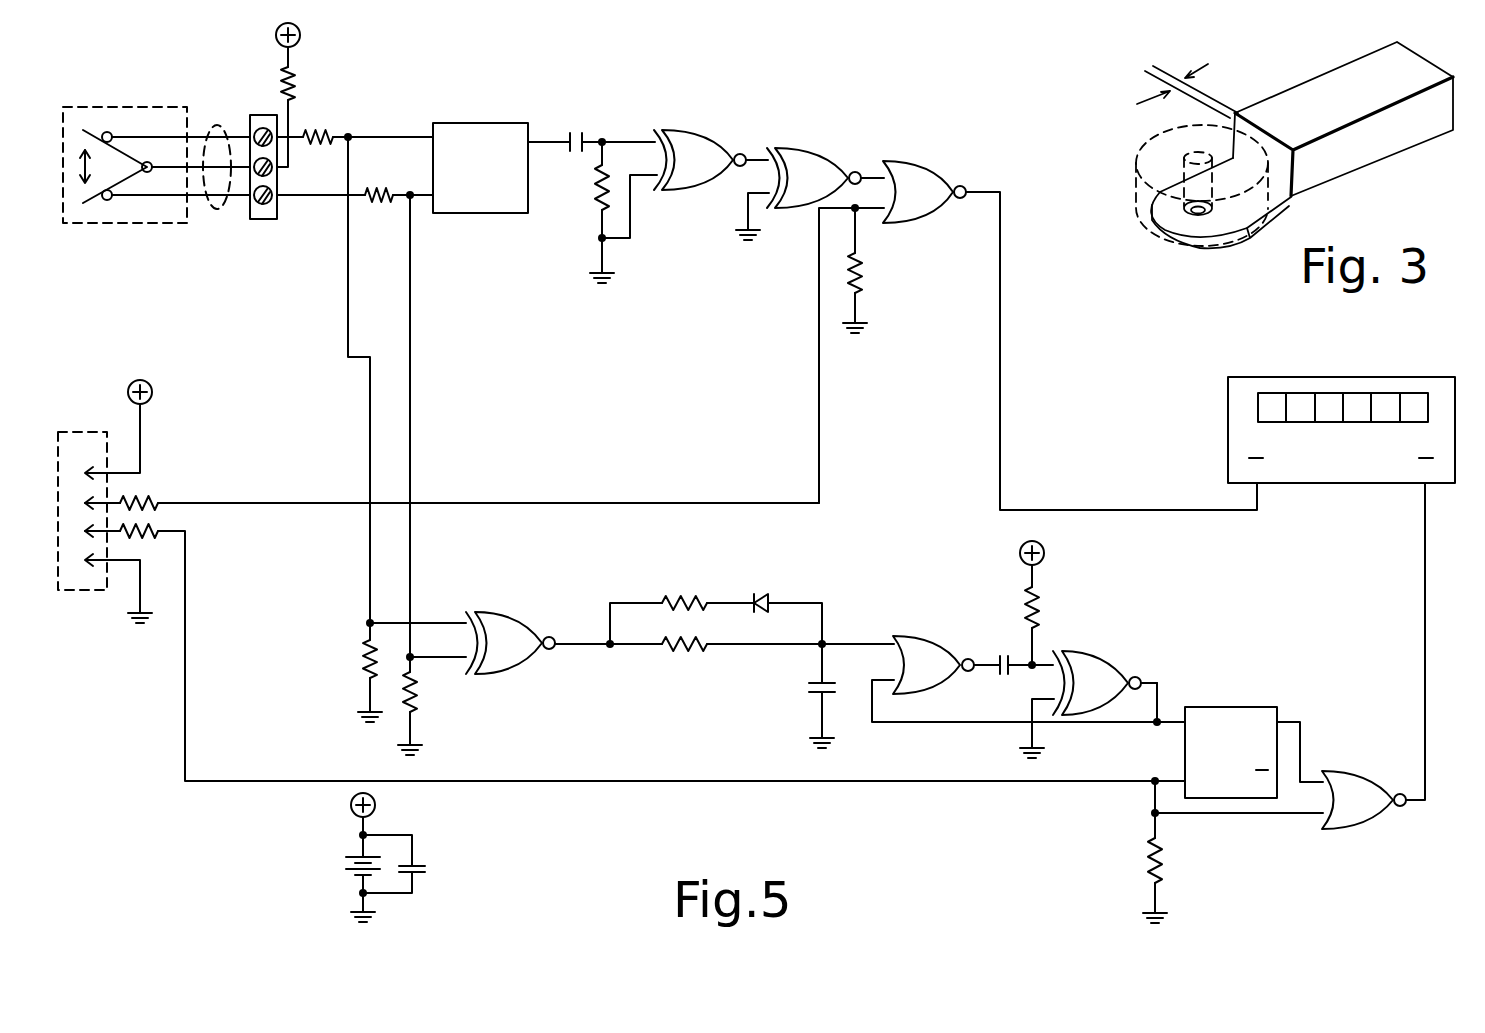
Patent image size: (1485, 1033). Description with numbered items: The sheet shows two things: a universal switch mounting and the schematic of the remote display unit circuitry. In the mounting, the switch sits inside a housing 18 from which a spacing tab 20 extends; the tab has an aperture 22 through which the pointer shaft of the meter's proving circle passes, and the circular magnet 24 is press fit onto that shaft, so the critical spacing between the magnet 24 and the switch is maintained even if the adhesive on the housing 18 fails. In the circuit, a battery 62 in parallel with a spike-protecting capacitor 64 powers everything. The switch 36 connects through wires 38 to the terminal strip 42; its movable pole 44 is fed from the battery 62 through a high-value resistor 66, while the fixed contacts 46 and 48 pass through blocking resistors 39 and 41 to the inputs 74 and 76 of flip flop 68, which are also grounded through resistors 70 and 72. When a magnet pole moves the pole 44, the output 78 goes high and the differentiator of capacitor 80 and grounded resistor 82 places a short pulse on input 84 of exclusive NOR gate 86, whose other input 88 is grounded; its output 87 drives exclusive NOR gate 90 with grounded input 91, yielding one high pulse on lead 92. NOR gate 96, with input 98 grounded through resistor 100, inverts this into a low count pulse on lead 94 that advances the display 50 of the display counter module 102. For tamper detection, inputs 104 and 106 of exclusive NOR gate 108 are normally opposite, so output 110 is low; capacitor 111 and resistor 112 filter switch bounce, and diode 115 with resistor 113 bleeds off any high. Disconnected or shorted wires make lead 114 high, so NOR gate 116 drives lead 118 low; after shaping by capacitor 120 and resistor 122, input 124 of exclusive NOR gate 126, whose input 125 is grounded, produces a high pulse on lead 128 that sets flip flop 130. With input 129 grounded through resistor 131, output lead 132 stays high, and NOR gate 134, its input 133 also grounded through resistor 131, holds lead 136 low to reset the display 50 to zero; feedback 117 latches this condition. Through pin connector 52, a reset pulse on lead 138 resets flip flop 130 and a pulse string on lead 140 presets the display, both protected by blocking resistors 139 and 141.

In FIG. 3, the housing 18 is at (1278, 92).
In FIG. 3, the spacing tab 20 is at (1282, 217).
In FIG. 3, the aperture 22 is at (1192, 213).
In FIG. 3, the circular magnet 24 is at (1143, 140).
In FIG. 5, the switch 36 is at (160, 107).
In FIG. 5, the wires 38 is at (217, 125).
In FIG. 5, the blocking resistor 39 is at (308, 133).
In FIG. 5, the blocking resistor 41 is at (372, 191).
In FIG. 5, the terminal strip 42 is at (268, 222).
In FIG. 5, the movable pole 44 is at (130, 190).
In FIG. 5, the fixed contact 46 is at (108, 132).
In FIG. 5, the fixed contact 48 is at (106, 203).
In FIG. 5, the display 50 is at (1307, 422).
In FIG. 5, the pin connector 52 is at (65, 432).
In FIG. 5, the battery 62 is at (345, 865).
In FIG. 5, the capacitor 64 is at (420, 862).
In FIG. 5, the resistor 66 is at (300, 72).
In FIG. 5, the flip flop 68 is at (470, 123).
In FIG. 5, the resistor 70 is at (358, 658).
In FIG. 5, the resistor 72 is at (407, 706).
In FIG. 5, the input 74 is at (432, 129).
In FIG. 5, the input 76 is at (423, 212).
In FIG. 5, the output 78 is at (535, 138).
In FIG. 5, the capacitor 80 is at (580, 132).
In FIG. 5, the grounded resistor 82 is at (594, 184).
In FIG. 5, the input 84 is at (620, 138).
In FIG. 5, the exclusive NOR gate 86 is at (686, 132).
In FIG. 5, the output 87 is at (750, 158).
In FIG. 5, the input 88 is at (636, 178).
In FIG. 5, the exclusive NOR gate 90 is at (795, 150).
In FIG. 5, the input 91 is at (745, 213).
In FIG. 5, the lead 92 is at (860, 175).
In FIG. 5, the lead 94 is at (987, 190).
In FIG. 5, the NOR gate 96 is at (910, 166).
In FIG. 5, the input 98 is at (868, 212).
In FIG. 5, the resistor 100 is at (868, 277).
In FIG. 5, the display counter module 102 is at (1343, 375).
In FIG. 5, the input 104 is at (425, 622).
In FIG. 5, the input 106 is at (430, 663).
In FIG. 5, the exclusive NOR gate 108 is at (510, 610).
In FIG. 5, the output lead 110 is at (580, 640).
In FIG. 5, the grounded capacitor 111 is at (810, 690).
In FIG. 5, the resistor 112 is at (670, 650).
In FIG. 5, the resistor 113 is at (670, 594).
In FIG. 5, the lead 114 is at (850, 640).
In FIG. 5, the diode 115 is at (762, 596).
In FIG. 5, the NOR gate 116 is at (912, 636).
In FIG. 5, the feedback 117 is at (988, 725).
In FIG. 5, the lead 118 is at (987, 670).
In FIG. 5, the capacitor 120 is at (997, 654).
In FIG. 5, the resistor 122 is at (1043, 597).
In FIG. 5, the input 124 is at (1041, 662).
In FIG. 5, the input 125 is at (1038, 738).
In FIG. 5, the exclusive NOR gate 126 is at (1105, 658).
In FIG. 5, the lead 128 is at (1158, 700).
In FIG. 5, the input 129 is at (1165, 787).
In FIG. 5, the flip flop 130 is at (1228, 707).
In FIG. 5, the resistor 131 is at (1147, 862).
In FIG. 5, the output lead 132 is at (1289, 722).
In FIG. 5, the input 133 is at (1230, 815).
In FIG. 5, the NOR gate 134 is at (1345, 776).
In FIG. 5, the lead 136 is at (1422, 656).
In FIG. 5, the lead 138 is at (186, 582).
In FIG. 5, the blocking resistor 139 is at (137, 494).
In FIG. 5, the lead 140 is at (218, 503).
In FIG. 5, the blocking resistor 141 is at (155, 527).